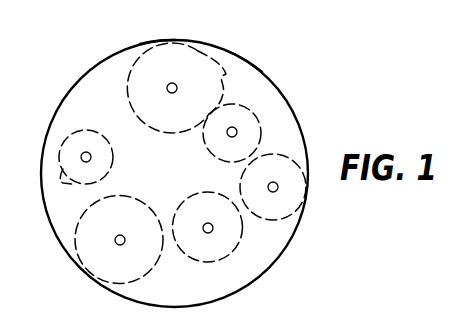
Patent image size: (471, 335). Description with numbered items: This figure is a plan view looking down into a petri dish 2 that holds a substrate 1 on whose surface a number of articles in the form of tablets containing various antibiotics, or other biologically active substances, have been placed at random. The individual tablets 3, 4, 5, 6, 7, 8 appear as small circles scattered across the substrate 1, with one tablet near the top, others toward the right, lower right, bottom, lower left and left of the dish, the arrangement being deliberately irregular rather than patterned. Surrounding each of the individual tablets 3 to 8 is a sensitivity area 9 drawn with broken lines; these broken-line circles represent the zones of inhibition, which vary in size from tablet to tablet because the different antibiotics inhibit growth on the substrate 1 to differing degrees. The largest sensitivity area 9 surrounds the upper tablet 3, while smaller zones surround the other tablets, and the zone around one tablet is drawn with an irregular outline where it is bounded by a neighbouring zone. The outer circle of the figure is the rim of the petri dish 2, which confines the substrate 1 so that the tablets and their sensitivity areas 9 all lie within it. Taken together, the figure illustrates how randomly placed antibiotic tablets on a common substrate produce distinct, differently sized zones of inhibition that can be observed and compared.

The substrate 1 is at (96, 80).
The petri dish 2 is at (240, 57).
The tablet 3 is at (173, 83).
The tablet 4 is at (237, 131).
The tablet 5 is at (277, 191).
The tablet 6 is at (212, 232).
The tablet 7 is at (118, 245).
The tablet 8 is at (81, 157).
The sensitivity areas 9 is at (157, 56).